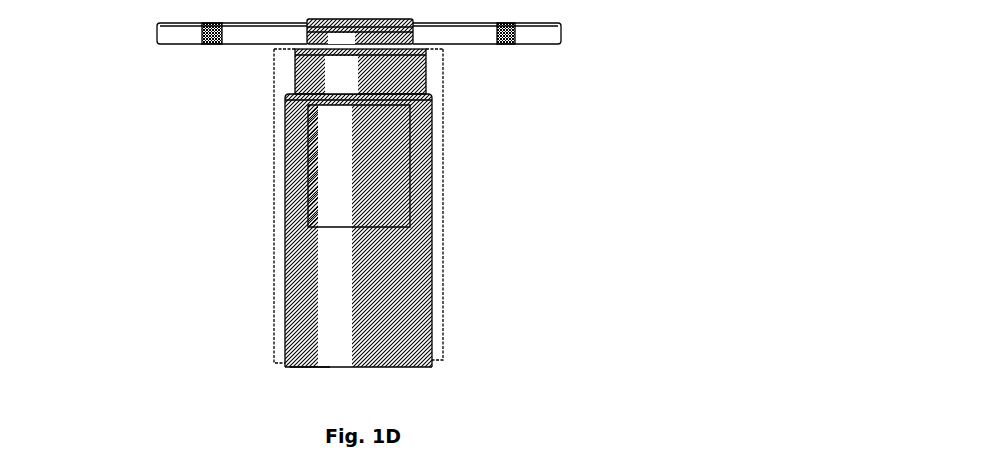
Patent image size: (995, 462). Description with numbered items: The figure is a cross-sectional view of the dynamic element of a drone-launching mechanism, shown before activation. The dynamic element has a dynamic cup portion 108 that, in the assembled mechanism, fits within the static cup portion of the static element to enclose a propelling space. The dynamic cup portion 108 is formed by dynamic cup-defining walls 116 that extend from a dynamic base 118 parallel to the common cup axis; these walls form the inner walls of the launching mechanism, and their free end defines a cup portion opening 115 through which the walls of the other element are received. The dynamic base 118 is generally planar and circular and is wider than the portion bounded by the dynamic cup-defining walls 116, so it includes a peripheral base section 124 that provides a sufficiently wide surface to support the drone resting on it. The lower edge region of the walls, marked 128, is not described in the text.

The dynamic cup portion 108 is at (277, 185).
The cup portion opening 115 is at (313, 373).
The dynamic cup-defining walls 116 is at (277, 281).
The dynamic base 118 is at (470, 41).
The peripheral base section 124 is at (177, 45).
The bottom edge 128 is at (440, 365).